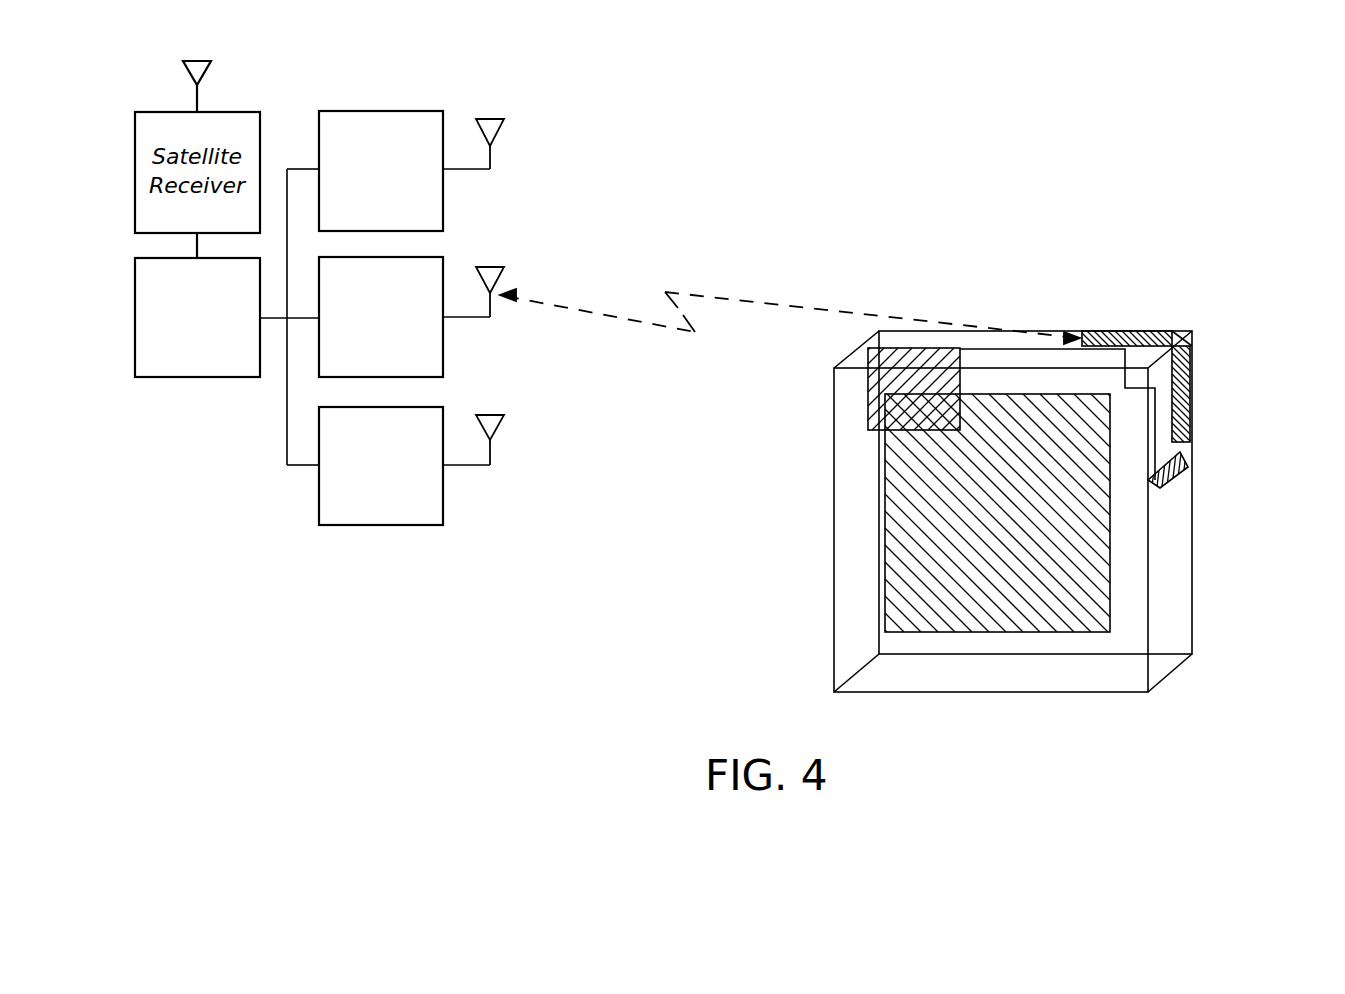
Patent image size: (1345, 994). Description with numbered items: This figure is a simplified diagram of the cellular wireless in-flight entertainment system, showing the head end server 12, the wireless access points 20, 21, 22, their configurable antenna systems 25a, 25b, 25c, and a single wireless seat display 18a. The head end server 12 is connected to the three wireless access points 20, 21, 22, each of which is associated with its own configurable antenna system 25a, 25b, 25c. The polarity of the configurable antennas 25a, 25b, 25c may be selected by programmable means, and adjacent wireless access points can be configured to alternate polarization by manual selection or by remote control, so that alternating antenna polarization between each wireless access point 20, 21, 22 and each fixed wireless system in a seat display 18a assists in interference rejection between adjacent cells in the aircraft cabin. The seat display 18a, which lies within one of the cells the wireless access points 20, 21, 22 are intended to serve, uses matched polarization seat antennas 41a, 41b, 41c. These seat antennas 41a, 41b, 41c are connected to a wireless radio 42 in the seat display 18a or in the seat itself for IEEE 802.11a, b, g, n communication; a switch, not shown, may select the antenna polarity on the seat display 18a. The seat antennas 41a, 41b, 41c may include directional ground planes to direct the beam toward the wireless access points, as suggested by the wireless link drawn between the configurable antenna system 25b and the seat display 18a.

The head end server 12 is at (197, 377).
The wireless access point 20 is at (390, 525).
The wireless access point 21 is at (407, 257).
The wireless access point 22 is at (371, 111).
The configurable antenna system 25a is at (500, 425).
The configurable antenna system 25b is at (503, 275).
The configurable antenna system 25c is at (503, 128).
The seat display 18a is at (1192, 600).
The wireless radio 42 is at (910, 348).
The seat antenna 41a is at (1135, 331).
The seat antenna 41b is at (1192, 388).
The seat antenna 41c is at (1182, 476).